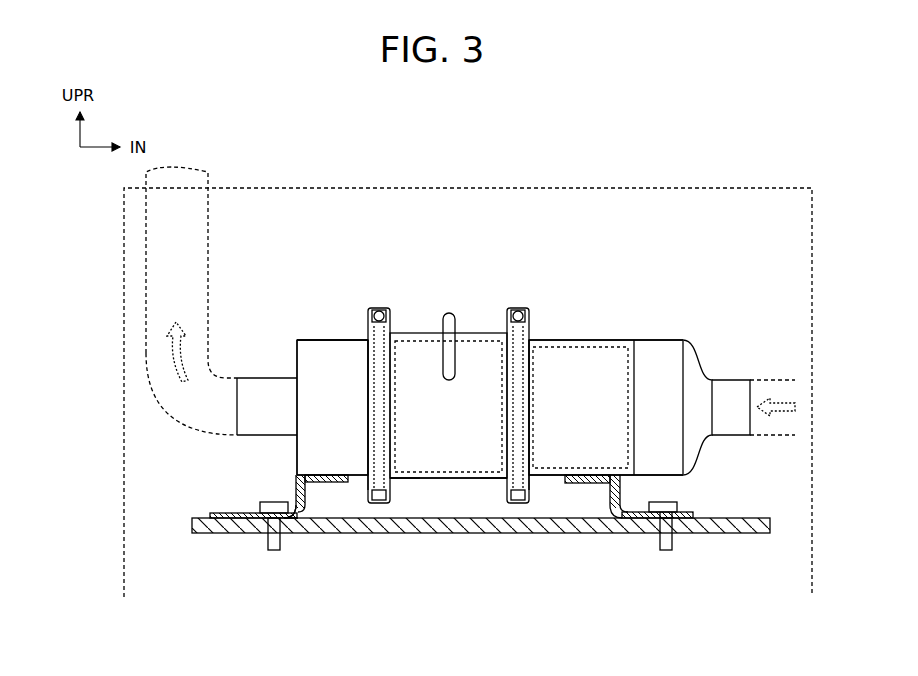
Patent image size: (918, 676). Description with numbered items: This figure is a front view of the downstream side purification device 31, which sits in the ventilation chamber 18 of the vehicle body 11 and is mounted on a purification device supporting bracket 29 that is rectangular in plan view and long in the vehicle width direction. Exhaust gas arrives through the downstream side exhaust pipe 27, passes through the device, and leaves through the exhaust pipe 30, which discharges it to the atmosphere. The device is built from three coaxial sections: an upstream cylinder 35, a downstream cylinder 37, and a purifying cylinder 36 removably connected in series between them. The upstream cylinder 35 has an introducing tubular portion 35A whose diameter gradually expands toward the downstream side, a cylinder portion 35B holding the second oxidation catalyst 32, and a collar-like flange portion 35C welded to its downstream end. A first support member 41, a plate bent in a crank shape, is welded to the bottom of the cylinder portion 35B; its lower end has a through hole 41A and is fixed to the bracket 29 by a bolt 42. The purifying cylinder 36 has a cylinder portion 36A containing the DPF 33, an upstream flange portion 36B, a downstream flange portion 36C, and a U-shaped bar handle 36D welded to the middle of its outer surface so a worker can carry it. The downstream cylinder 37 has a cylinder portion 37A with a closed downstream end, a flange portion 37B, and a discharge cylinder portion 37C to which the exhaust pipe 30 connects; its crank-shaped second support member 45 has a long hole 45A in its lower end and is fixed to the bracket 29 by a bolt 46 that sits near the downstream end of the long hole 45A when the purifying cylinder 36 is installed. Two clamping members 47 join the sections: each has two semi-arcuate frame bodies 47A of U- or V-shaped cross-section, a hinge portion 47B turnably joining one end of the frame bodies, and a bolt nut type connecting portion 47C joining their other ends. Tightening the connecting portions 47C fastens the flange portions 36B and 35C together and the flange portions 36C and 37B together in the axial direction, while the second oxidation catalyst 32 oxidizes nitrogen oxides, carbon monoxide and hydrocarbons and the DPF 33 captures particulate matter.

The vehicle body 11 is at (704, 188).
The ventilation chamber 18 is at (408, 250).
The downstream side exhaust pipe 27 is at (782, 380).
The purification device supporting bracket 29 is at (450, 528).
The exhaust pipe 30 is at (145, 235).
The downstream side purification device 31 is at (580, 259).
The second oxidation catalyst 32 is at (597, 340).
The DPF 33 is at (417, 357).
The upstream cylinder 35 is at (627, 340).
The introducing tubular portion 35A is at (693, 372).
The cylinder portion 35B is at (613, 372).
The flange portion 35C is at (540, 478).
The purifying cylinder 36 is at (468, 332).
The cylinder portion 36A is at (418, 480).
The upstream flange portion 36B is at (500, 480).
The downstream flange portion 36C is at (395, 482).
The handle 36D is at (447, 313).
The downstream cylinder 37 is at (303, 338).
The cylinder portion 37A is at (333, 338).
The flange portion 37B is at (368, 482).
The discharge cylinder portion 37C is at (258, 425).
The first support member 41 is at (606, 505).
The through hole 41A is at (663, 516).
The bolt 42 is at (672, 504).
The second support member 45 is at (303, 520).
The long hole 45A is at (243, 513).
The bolt 46 is at (271, 502).
The clamping member 47 is at (367, 337).
The semi-arcuate frame body 47A is at (366, 365).
The hinge portion 47B is at (380, 500).
The bolt nut type connecting portion 47C is at (379, 308).